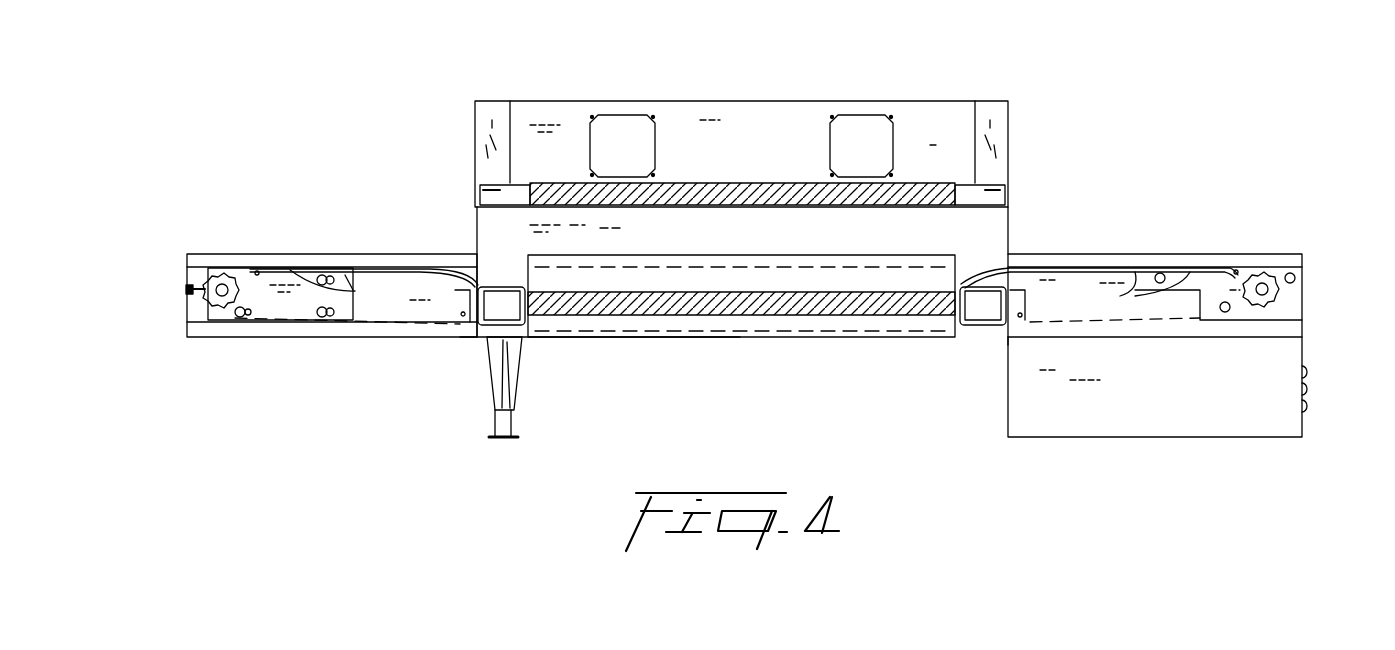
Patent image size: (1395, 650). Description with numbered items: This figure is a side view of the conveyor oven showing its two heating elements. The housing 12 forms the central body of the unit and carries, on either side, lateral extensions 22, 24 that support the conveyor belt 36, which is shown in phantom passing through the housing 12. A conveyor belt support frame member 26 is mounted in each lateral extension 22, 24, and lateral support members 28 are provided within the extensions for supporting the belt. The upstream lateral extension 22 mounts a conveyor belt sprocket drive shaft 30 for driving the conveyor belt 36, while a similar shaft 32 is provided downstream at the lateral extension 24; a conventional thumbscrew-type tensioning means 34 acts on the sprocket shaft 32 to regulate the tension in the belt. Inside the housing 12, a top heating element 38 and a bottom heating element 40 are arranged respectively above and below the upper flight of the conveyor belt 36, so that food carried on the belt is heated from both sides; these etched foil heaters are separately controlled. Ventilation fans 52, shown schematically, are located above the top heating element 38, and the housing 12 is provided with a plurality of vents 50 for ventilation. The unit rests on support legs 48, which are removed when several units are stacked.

The housing 12 is at (740, 101).
The lateral extension 22 is at (1157, 254).
The lateral extension 24 is at (298, 254).
The conveyor belt support frame member 26 is at (406, 268).
The lateral support members 28 is at (355, 291).
The conveyor belt sprocket drive shaft 30 is at (1268, 272).
The shaft 32 is at (223, 275).
The thumbscrew-type tensioning means 34 is at (186, 291).
The conveyor belt 36 is at (729, 264).
The top heating element 38 is at (727, 184).
The bottom heating element 40 is at (886, 293).
The support legs 48 is at (508, 381).
The vents 50 is at (1322, 392).
The ventilation fans 52 is at (632, 114).